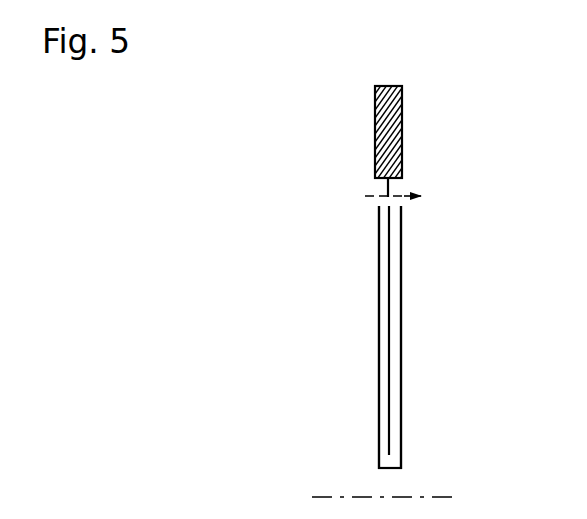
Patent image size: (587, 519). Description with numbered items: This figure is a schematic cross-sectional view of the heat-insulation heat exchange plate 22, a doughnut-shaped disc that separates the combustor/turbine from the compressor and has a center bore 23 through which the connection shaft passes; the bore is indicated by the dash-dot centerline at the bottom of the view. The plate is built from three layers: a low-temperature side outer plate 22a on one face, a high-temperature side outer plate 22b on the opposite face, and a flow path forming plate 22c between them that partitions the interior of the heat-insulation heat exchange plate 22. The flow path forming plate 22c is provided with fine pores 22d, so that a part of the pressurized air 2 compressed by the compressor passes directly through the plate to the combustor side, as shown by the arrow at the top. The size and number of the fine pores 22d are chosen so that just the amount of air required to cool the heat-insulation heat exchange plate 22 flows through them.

The heat-insulation heat exchange plate 22 is at (307, 214).
The low-temperature side outer plate 22a is at (377, 362).
The high-temperature side outer plate 22b is at (403, 382).
The flow path forming plate 22c is at (388, 417).
The fine pores 22d is at (388, 192).
The pressurized air 2 is at (408, 195).
The center bore 23 is at (389, 485).